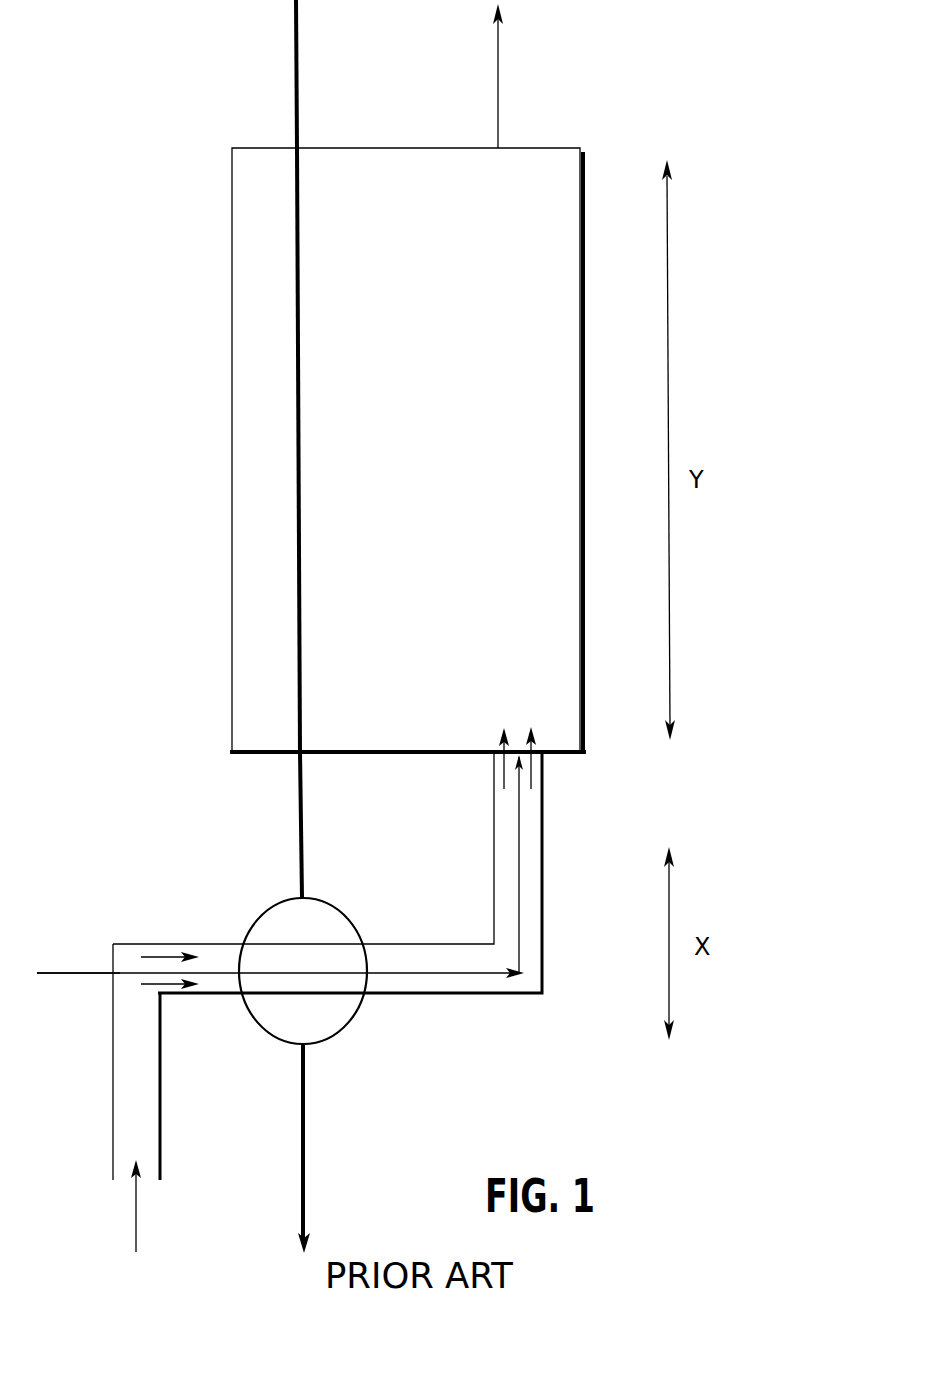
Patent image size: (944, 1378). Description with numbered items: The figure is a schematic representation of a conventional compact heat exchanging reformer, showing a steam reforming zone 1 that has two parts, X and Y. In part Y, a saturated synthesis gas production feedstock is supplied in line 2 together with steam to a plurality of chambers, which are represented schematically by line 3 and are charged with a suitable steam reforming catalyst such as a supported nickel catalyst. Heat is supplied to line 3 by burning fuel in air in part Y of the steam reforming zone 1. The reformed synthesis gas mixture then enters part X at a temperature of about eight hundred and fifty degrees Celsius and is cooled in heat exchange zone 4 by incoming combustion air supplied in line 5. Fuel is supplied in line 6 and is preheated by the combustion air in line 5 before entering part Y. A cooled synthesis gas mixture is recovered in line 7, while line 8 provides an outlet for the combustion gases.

The steam reforming zone 1 is at (735, 552).
The line 2 is at (296, 57).
The line 3 is at (298, 478).
The heat exchange zone 4 is at (268, 905).
The line 5 is at (128, 1087).
The line 6 is at (73, 973).
The line 7 is at (305, 1172).
The line 8 is at (498, 83).